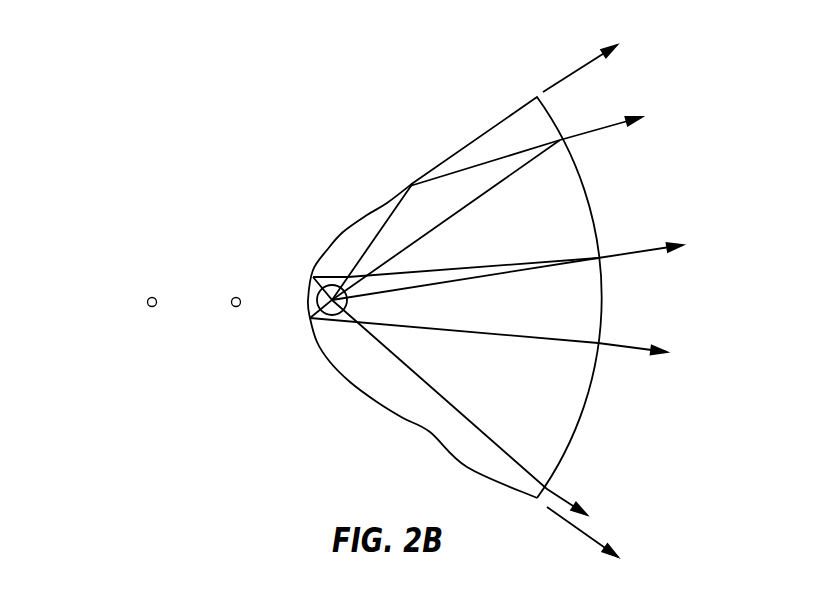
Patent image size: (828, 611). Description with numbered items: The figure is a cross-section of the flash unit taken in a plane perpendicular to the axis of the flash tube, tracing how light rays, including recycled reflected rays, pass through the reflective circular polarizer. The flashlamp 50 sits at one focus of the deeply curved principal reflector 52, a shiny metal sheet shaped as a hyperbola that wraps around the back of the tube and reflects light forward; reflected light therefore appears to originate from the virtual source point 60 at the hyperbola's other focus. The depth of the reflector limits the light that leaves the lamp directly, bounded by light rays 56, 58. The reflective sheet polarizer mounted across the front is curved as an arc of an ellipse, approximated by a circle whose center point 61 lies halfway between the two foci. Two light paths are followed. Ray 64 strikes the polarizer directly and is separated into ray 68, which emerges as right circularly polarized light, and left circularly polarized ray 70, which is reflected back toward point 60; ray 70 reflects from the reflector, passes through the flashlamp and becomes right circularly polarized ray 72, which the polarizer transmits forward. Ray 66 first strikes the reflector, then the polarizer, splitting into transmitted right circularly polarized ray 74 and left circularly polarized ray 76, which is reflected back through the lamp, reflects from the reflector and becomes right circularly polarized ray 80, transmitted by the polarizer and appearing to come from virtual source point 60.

The flashlamp 50 is at (308, 285).
The principal reflector 52 is at (413, 180).
The light ray 56 is at (570, 72).
The light ray 58 is at (573, 527).
The virtual source point 60 is at (147, 305).
The center point of polarizer circle 61 is at (232, 307).
The light ray 64 is at (537, 269).
The light ray 66 is at (490, 163).
The light ray 68 is at (628, 254).
The light ray 70 is at (523, 262).
The light ray 72 is at (502, 445).
The light ray 74 is at (597, 133).
The light ray 76 is at (507, 181).
The light ray 80 is at (523, 339).